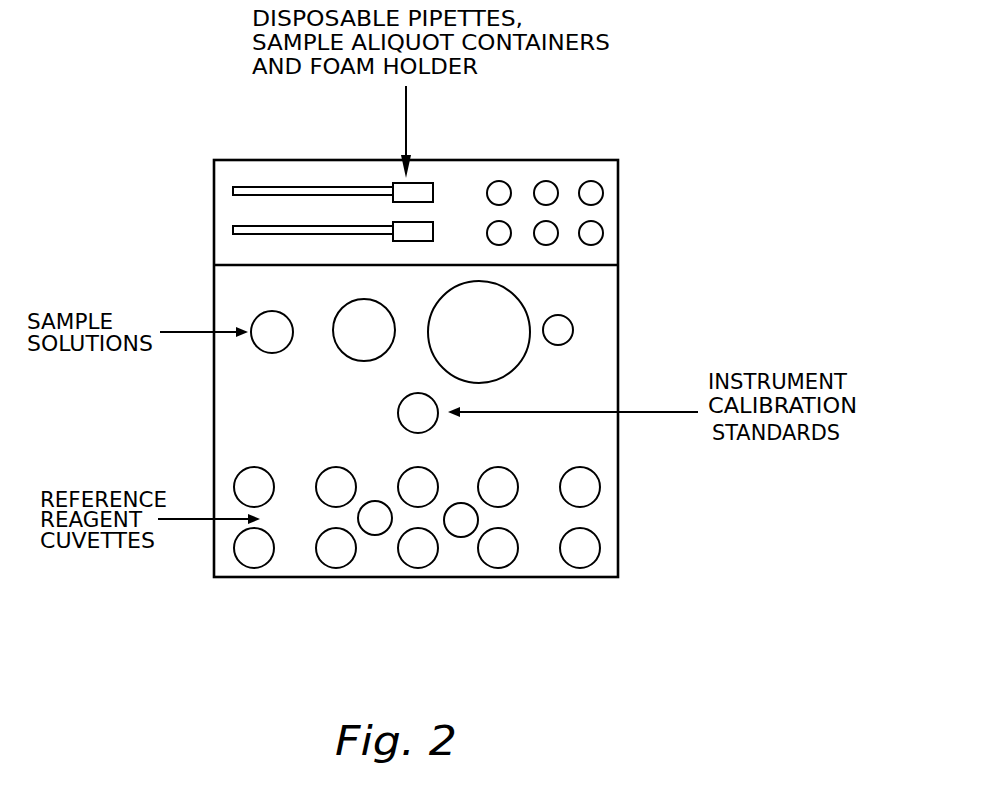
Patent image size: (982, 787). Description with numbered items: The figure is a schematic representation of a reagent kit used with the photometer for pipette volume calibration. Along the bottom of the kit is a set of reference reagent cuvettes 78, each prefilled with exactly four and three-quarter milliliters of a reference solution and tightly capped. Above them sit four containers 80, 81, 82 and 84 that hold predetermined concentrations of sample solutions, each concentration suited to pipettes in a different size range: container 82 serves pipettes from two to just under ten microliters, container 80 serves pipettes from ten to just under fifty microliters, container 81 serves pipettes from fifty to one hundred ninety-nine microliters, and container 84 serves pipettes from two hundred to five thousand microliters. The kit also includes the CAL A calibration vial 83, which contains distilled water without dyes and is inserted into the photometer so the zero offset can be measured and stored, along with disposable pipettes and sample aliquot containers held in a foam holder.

The reference reagent cuvettes 78 is at (478, 557).
The container 80 is at (288, 317).
The container 81 is at (386, 308).
The container 82 is at (569, 320).
The CAL A calibration vial 83 is at (405, 398).
The container 84 is at (521, 304).